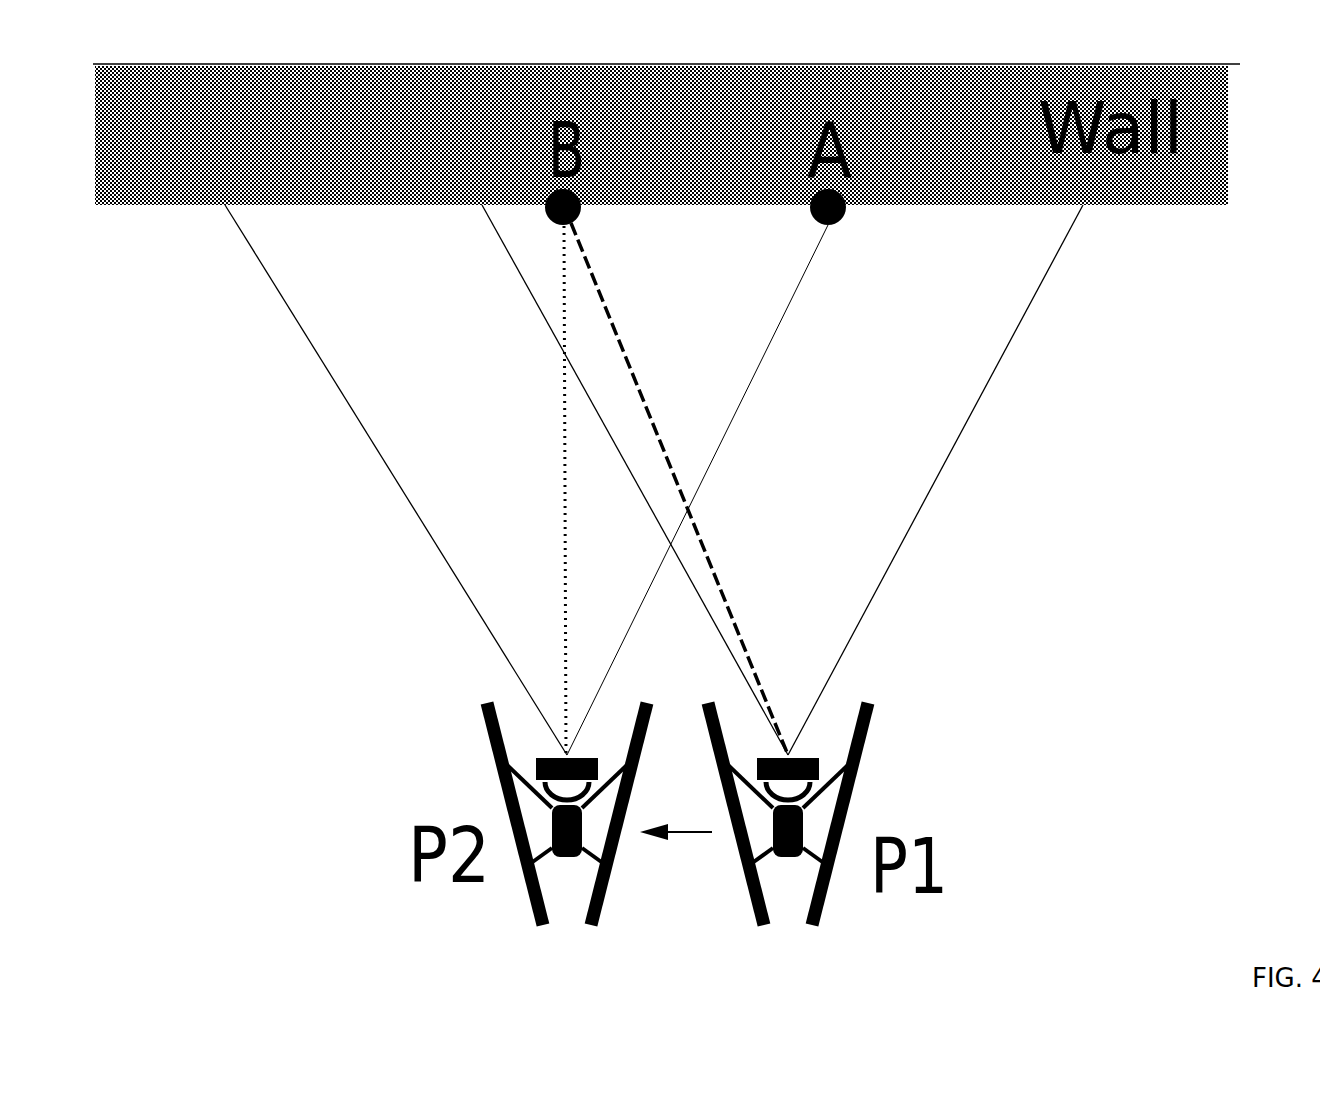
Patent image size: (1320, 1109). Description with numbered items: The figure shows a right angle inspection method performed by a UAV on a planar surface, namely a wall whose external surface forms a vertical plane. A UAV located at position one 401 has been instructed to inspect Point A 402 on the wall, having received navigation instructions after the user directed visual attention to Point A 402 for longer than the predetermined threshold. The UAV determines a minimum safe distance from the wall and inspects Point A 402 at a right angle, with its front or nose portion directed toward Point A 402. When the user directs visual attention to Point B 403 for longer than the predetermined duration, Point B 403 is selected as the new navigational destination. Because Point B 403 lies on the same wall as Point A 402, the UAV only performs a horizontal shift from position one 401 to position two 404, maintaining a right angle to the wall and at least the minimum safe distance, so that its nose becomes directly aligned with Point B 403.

The position one 401 is at (828, 803).
The Point A 402 is at (845, 218).
The Point B 403 is at (578, 215).
The position two 404 is at (537, 770).